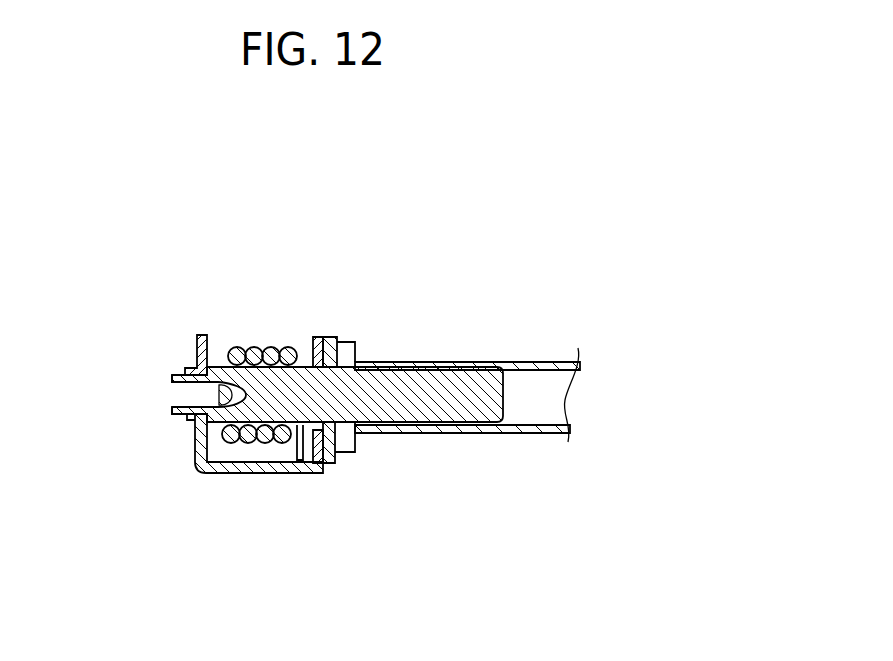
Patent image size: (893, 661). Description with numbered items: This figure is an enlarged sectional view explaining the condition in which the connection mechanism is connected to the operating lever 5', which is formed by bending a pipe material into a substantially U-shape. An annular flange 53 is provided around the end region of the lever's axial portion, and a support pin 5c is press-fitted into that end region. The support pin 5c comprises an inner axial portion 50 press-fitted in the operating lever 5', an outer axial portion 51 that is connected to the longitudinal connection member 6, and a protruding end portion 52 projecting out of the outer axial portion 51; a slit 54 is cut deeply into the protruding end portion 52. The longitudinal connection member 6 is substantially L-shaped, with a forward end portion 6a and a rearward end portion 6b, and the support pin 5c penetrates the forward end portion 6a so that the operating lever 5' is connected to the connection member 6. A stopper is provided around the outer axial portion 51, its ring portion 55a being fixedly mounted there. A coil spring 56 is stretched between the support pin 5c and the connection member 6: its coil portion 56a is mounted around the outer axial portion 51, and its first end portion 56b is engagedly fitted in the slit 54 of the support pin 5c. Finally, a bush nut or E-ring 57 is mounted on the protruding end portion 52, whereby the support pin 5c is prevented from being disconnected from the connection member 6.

The inner axial portion 50 is at (455, 385).
The protruding end portion 52 is at (197, 373).
The slit 54 is at (178, 393).
The bush nut or E-ring 57 is at (190, 430).
The forward end portion 6a is at (198, 342).
The rearward end portion 6b is at (322, 336).
The ring portion 55a is at (325, 462).
The annular flange 53 is at (342, 453).
The support pin 5c is at (385, 363).
The operating lever 5' is at (467, 331).
The outer axial portion 51 is at (297, 461).
The coil spring 56 is at (262, 333).
The coil portion 56a is at (287, 346).
The first end portion 56b is at (229, 347).
The longitudinal connection member 6 is at (235, 483).